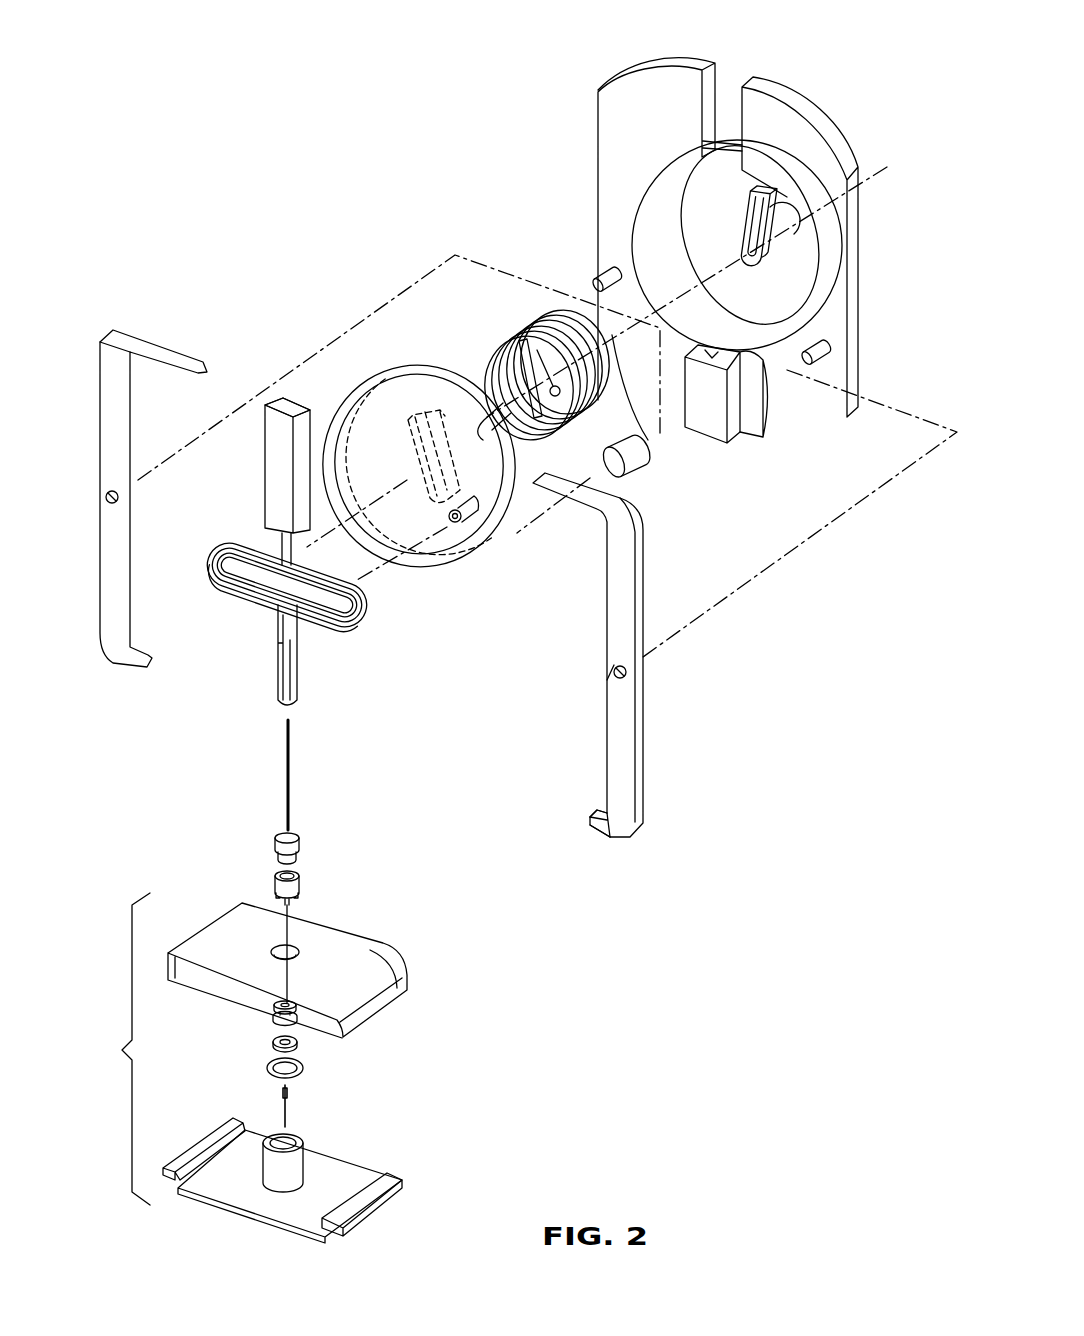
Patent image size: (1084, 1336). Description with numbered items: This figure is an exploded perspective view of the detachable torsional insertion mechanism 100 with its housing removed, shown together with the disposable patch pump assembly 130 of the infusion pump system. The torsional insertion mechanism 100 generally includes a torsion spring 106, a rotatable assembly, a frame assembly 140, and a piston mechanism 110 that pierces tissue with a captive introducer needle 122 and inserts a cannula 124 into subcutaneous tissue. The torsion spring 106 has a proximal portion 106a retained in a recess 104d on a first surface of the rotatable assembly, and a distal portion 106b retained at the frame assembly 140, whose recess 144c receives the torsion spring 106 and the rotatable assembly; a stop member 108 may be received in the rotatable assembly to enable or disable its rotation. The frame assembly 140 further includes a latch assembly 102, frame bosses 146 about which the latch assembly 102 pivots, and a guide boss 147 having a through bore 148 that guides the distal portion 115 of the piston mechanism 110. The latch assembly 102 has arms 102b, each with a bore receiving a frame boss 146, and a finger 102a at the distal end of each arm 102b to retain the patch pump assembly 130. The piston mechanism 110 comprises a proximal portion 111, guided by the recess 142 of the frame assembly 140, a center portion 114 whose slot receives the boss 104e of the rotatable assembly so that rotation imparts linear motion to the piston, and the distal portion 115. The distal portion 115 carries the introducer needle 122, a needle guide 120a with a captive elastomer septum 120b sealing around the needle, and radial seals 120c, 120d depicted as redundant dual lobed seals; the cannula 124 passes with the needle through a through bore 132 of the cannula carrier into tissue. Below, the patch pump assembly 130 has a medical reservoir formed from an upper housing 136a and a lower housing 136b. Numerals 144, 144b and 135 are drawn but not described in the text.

The detachable torsional insertion mechanism 100 is at (250, 113).
The latch assembly 102 is at (99, 540).
The finger 102a is at (600, 810).
The arm 102b is at (615, 668).
The recess 104d is at (437, 425).
The boss 104e is at (461, 521).
The torsion spring 106 is at (520, 338).
The proximal portion 106a is at (530, 400).
The distal portion 106b is at (524, 340).
The stop member 108 is at (640, 465).
The piston mechanism 110 is at (283, 397).
The proximal portion 111 is at (298, 398).
The center portion 114 is at (358, 615).
The distal portion 115 is at (279, 665).
The captive introducer needle 122 is at (292, 750).
The needle guide 120a is at (300, 845).
The captive elastomer septum 120b is at (300, 888).
The radial seal 120c is at (273, 1008).
The radial seal 120d is at (268, 1043).
The o-ring 135 is at (305, 1070).
The cannula 124 is at (292, 1105).
The through bore 132 is at (300, 1167).
The upper housing 136a is at (405, 966).
The lower housing 136b is at (400, 1190).
The disposable patch pump assembly 130 is at (118, 1049).
The frame assembly 140 is at (808, 120).
The recess 142 is at (716, 80).
The drum 144 is at (790, 283).
The boss 144b is at (783, 256).
The recess 144c is at (747, 248).
The frame boss 146 is at (600, 276).
The guide boss 147 is at (707, 428).
The through bore 148 is at (763, 360).